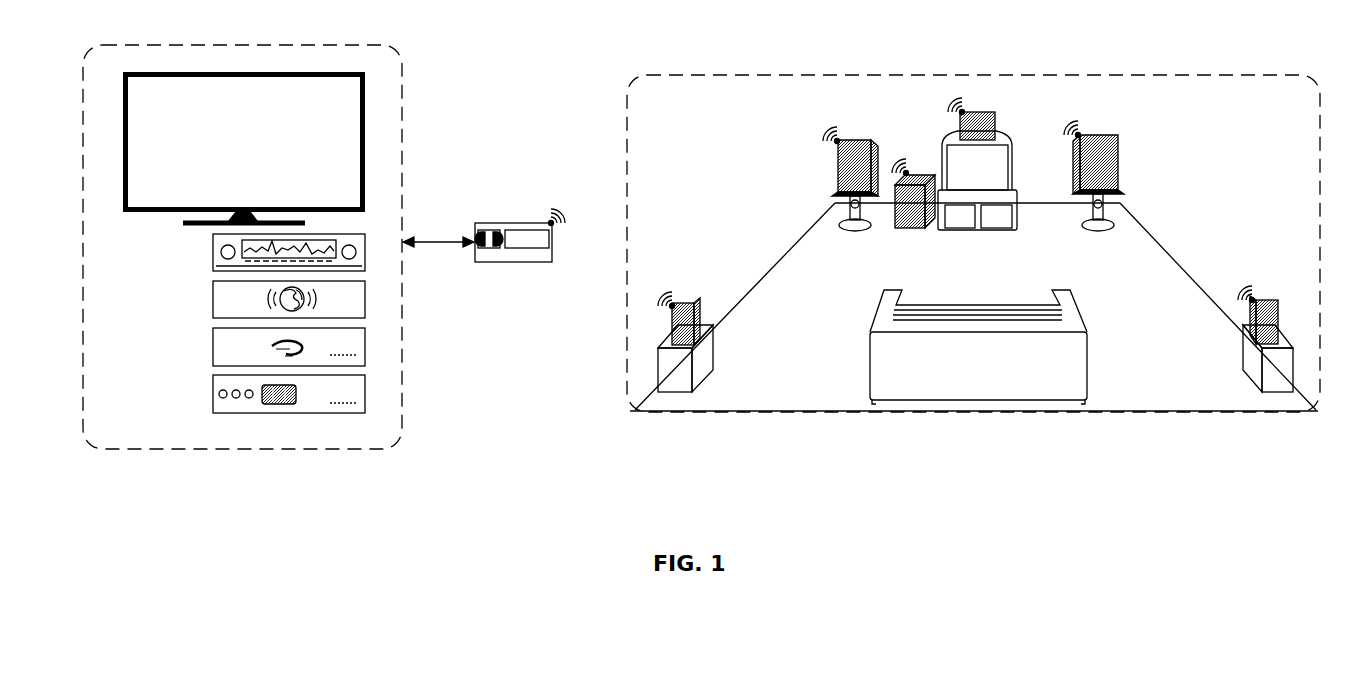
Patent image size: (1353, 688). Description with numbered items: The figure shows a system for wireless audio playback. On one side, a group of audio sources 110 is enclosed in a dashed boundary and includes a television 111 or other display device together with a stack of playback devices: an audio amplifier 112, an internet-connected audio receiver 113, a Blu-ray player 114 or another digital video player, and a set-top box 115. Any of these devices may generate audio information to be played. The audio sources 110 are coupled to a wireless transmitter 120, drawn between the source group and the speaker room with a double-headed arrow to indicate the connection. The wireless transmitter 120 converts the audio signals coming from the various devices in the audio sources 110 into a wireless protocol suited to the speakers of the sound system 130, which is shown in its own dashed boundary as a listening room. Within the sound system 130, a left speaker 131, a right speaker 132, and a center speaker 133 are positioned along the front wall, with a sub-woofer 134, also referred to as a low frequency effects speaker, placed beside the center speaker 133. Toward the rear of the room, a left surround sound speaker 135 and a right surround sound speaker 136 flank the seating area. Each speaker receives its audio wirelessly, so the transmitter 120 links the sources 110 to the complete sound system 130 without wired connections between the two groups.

The audio sources 110 is at (403, 68).
The television 111 is at (244, 149).
The audio amplifier 112 is at (213, 249).
The internet-connected audio receiver 113 is at (213, 296).
The Blu-ray player 114 is at (213, 343).
The set-top box 115 is at (213, 390).
The wireless transmitter 120 is at (500, 262).
The sound system 130 is at (627, 101).
The left speaker 131 is at (834, 179).
The right speaker 132 is at (1114, 176).
The center speaker 133 is at (1004, 158).
The sub-woofer 134 is at (929, 219).
The left surround sound speaker 135 is at (724, 342).
The right surround sound speaker 136 is at (1228, 339).